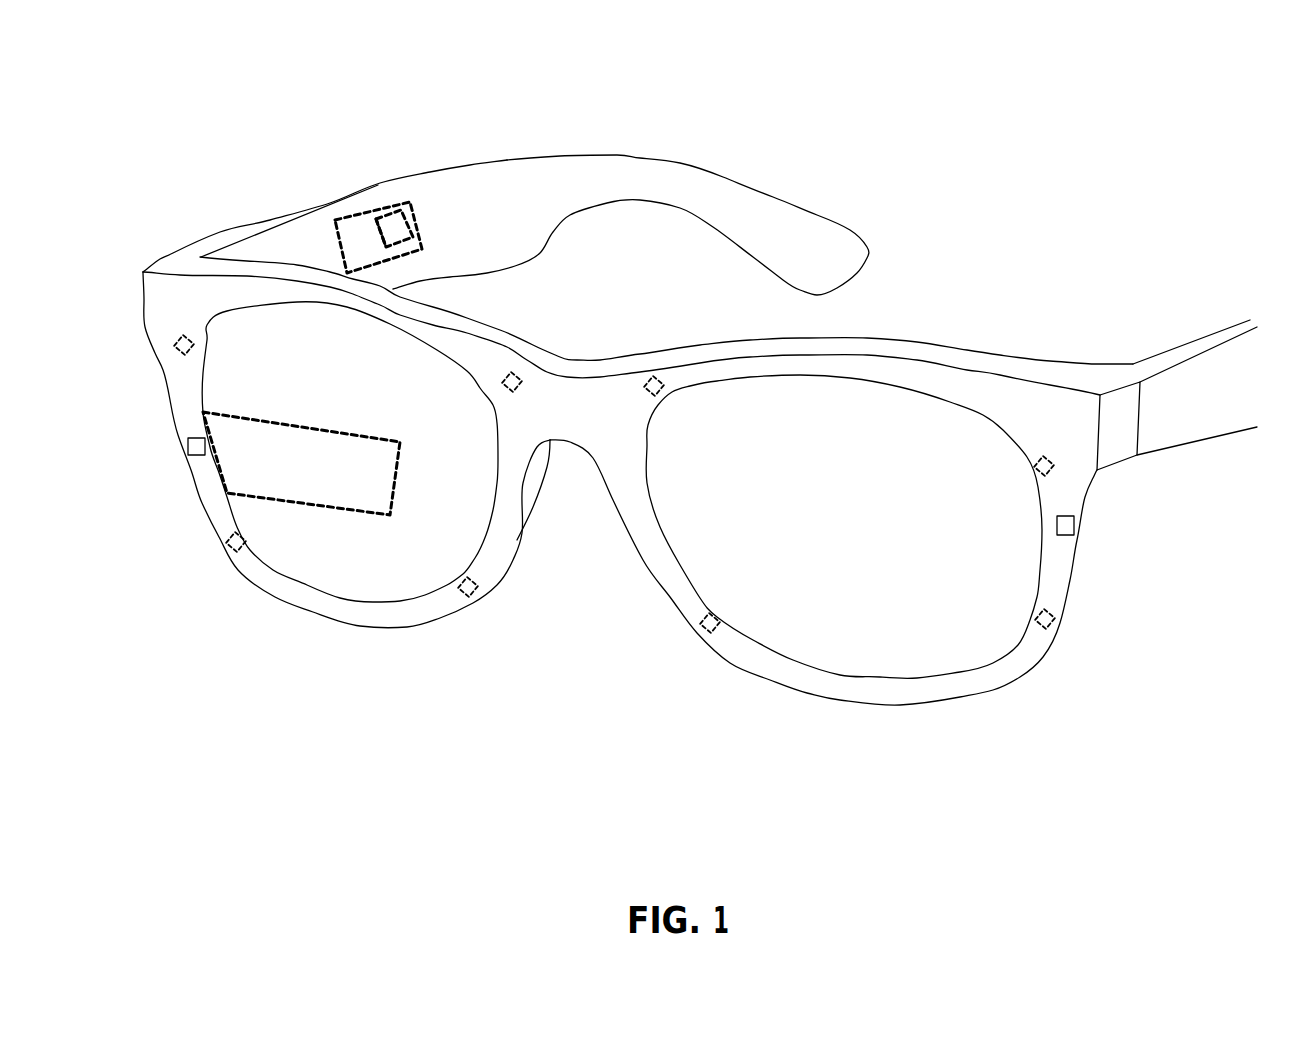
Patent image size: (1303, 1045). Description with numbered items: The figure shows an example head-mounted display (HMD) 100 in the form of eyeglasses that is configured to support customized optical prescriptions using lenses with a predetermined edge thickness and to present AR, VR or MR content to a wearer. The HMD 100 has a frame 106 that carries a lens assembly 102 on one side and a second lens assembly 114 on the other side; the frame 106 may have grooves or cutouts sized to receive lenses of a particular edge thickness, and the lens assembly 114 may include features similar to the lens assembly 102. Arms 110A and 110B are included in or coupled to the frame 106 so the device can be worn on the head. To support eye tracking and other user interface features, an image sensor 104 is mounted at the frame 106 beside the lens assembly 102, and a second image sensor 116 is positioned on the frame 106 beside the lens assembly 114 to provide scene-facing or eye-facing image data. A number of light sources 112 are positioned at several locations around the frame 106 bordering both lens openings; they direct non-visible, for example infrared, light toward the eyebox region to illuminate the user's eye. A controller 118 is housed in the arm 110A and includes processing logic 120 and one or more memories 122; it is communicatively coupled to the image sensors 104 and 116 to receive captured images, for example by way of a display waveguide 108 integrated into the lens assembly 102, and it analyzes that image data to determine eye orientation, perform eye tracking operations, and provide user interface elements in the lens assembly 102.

The head-mounted display (HMD) 100 is at (698, 40).
The lens assembly 102 is at (358, 376).
The image sensor 104 is at (188, 446).
The frame 106 is at (577, 414).
The waveguide 108 is at (360, 513).
The arm 110A is at (564, 201).
The arm 110B is at (1217, 407).
The light sources 112 is at (202, 348).
The lens assembly 114 is at (850, 427).
The image sensor 116 is at (1072, 530).
The controller 118 is at (420, 228).
The processing logic 120 is at (363, 247).
The memories 122 is at (400, 238).